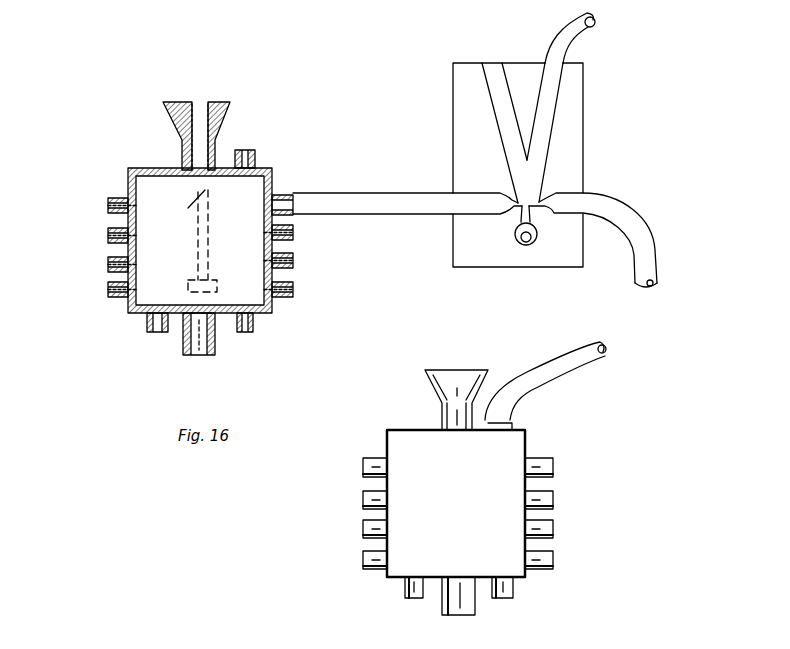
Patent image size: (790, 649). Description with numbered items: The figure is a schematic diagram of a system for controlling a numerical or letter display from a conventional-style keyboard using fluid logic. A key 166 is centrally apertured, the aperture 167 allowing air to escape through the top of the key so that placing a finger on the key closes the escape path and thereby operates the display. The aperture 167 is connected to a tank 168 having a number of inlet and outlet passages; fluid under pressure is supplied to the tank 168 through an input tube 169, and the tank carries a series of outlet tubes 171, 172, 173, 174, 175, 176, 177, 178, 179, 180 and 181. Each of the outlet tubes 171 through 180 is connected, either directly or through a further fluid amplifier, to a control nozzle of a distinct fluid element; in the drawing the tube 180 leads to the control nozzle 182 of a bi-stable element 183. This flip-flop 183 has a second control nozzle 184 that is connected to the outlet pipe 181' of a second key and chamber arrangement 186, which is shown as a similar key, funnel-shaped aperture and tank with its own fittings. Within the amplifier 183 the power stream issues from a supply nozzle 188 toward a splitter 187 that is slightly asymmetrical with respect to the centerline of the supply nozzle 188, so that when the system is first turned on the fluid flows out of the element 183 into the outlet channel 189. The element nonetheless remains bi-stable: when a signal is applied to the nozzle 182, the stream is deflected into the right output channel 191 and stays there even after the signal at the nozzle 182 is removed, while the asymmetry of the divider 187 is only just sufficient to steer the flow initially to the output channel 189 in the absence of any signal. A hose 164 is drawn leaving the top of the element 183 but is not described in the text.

The flexible hose 164 is at (600, 20).
The key 166 is at (224, 104).
The aperture 167 is at (197, 103).
The tank 168 is at (168, 187).
The input tube 169 is at (201, 342).
The outlet tube 171 is at (108, 206).
The outlet tube 172 is at (108, 236).
The outlet tube 173 is at (108, 264).
The outlet tube 174 is at (108, 290).
The outlet tube 175 is at (148, 326).
The outlet tube 176 is at (254, 332).
The outlet tube 177 is at (294, 291).
The outlet tube 178 is at (294, 264).
The outlet tube 179 is at (294, 236).
The outlet tube 180 is at (285, 203).
The outlet tube 181 is at (273, 147).
The outlet pipe 181' is at (545, 386).
The control nozzle 182 is at (478, 200).
The bi-stable element 183 is at (597, 101).
The second control nozzle 184 is at (570, 200).
The second key and chamber arrangement 186 is at (515, 517).
The splitter 187 is at (540, 96).
The supply nozzle 188 is at (534, 229).
The outlet channel 189 is at (495, 72).
The right output channel 191 is at (547, 122).